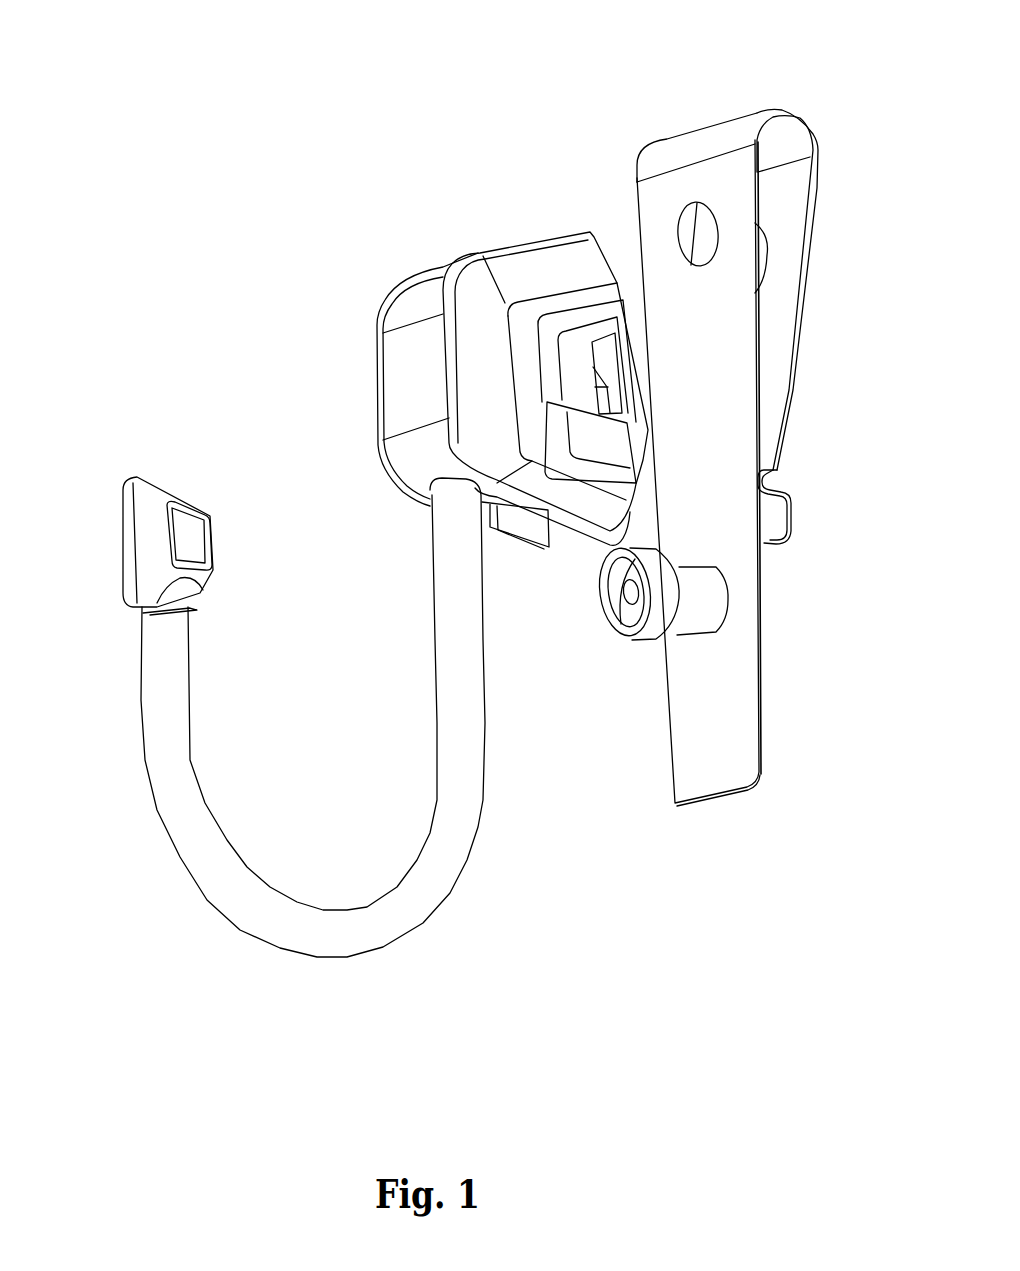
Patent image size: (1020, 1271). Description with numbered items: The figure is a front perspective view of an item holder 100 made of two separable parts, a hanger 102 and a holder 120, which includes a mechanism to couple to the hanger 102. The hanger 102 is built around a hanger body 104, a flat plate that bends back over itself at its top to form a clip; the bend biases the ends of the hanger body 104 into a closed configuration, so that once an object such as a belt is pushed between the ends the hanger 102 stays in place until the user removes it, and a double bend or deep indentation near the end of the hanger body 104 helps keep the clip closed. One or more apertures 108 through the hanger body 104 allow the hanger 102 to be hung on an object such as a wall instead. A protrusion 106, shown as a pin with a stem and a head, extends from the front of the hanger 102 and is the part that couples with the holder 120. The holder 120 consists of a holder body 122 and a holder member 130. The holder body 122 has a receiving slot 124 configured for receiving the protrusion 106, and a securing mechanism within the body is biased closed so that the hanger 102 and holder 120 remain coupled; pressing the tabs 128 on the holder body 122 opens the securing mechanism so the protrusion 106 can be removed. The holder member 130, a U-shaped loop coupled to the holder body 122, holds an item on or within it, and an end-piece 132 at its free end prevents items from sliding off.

The item holder 100 is at (208, 50).
The hanger 102 is at (705, 826).
The hanger body 104 is at (707, 502).
The protrusion 106 is at (622, 636).
The apertures 108 is at (718, 222).
The holder 120 is at (230, 300).
The holder body 122 is at (463, 257).
The receiving slot 124 is at (565, 547).
The tabs 128 is at (605, 440).
The holder member 130 is at (180, 857).
The end-piece 132 is at (150, 476).